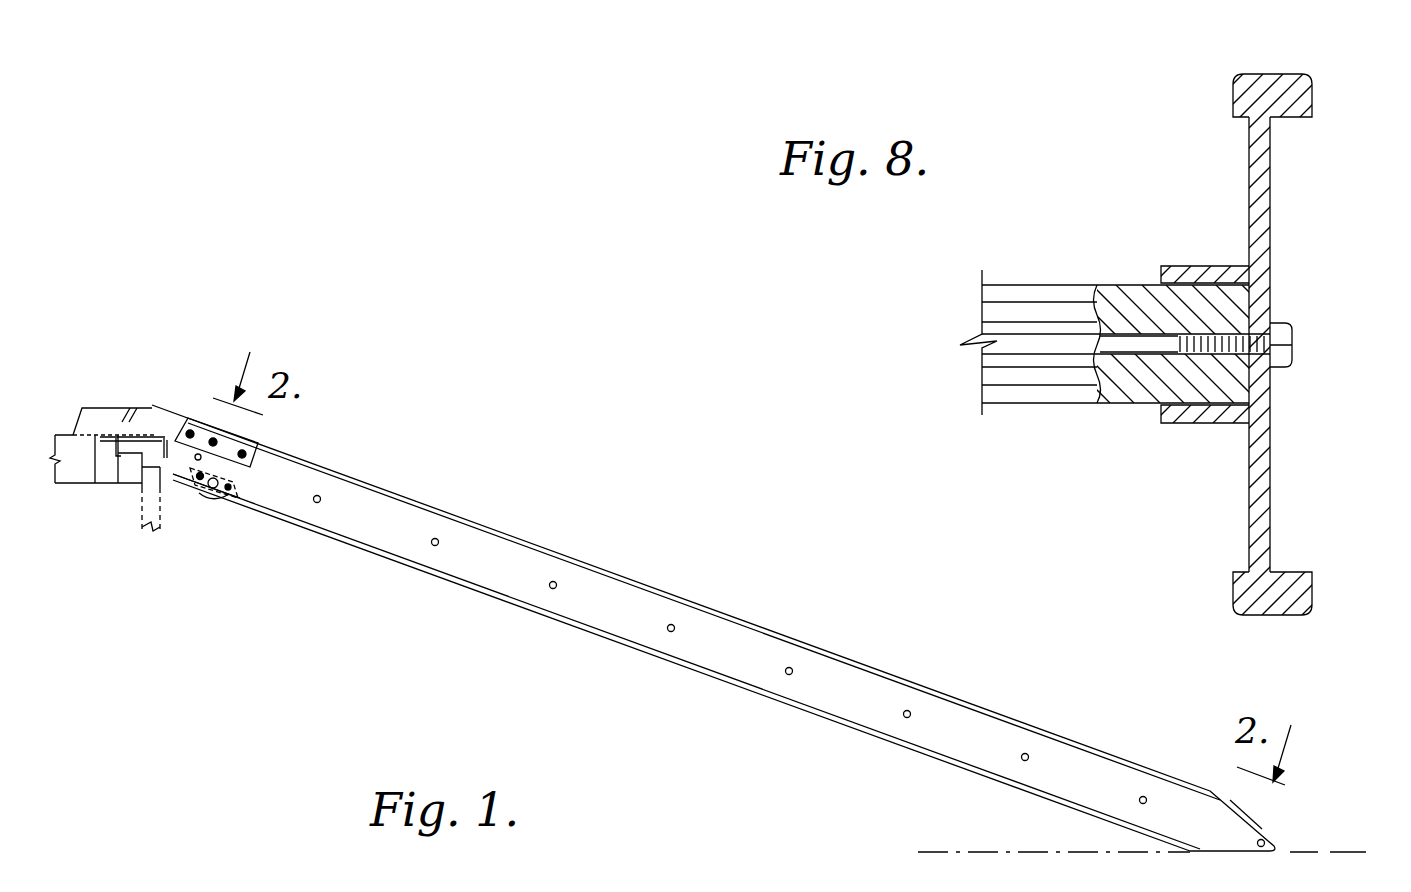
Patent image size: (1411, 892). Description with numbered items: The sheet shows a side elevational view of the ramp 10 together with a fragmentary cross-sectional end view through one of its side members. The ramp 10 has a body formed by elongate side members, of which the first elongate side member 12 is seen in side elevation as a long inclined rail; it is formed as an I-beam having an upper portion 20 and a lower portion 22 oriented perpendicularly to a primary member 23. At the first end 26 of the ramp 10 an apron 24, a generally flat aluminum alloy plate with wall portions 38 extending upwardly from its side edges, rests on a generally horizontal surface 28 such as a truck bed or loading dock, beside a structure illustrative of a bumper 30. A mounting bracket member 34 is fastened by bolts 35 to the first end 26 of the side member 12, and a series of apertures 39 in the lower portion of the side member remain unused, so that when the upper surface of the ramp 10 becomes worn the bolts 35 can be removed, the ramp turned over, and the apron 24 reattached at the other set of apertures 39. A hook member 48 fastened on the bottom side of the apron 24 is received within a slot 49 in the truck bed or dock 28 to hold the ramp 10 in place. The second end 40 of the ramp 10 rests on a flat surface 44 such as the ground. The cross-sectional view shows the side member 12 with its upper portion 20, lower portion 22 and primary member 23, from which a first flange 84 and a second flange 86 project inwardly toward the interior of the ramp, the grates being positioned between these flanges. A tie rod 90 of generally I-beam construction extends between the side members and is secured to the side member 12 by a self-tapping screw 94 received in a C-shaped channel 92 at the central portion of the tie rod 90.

In FIG. 1, the ramp 10 is at (612, 549).
In FIG. 1, the first elongate side member 12 is at (697, 624).
In FIG. 1, the upper portion 20 is at (830, 652).
In FIG. 8, the upper portion 20 is at (1275, 83).
In FIG. 1, the lower portion 22 is at (742, 690).
In FIG. 8, the lower portion 22 is at (1265, 605).
In FIG. 8, the primary member 23 is at (1270, 478).
In FIG. 1, the apron 24 is at (80, 406).
In FIG. 1, the first end 26 is at (232, 522).
In FIG. 1, the horizontal surface 28 is at (67, 432).
In FIG. 1, the bumper 30 is at (157, 533).
In FIG. 1, the mounting bracket member 34 is at (181, 421).
In FIG. 1, the bolts 35 is at (244, 453).
In FIG. 1, the wall portion 38 is at (122, 412).
In FIG. 1, the apertures 39 is at (177, 468).
In FIG. 1, the second end 40 is at (1280, 817).
In FIG. 1, the flat surface 44 is at (1328, 852).
In FIG. 1, the hook member 48 is at (116, 445).
In FIG. 1, the slot 49 is at (115, 491).
In FIG. 8, the first flange 84 is at (1210, 263).
In FIG. 8, the second flange 86 is at (1198, 423).
In FIG. 8, the tie rod 90 is at (1115, 283).
In FIG. 8, the C-shaped channel 92 is at (1137, 345).
In FIG. 1, the self-tapping screw 94 is at (437, 547).
In FIG. 8, the self-tapping screw 94 is at (1291, 323).